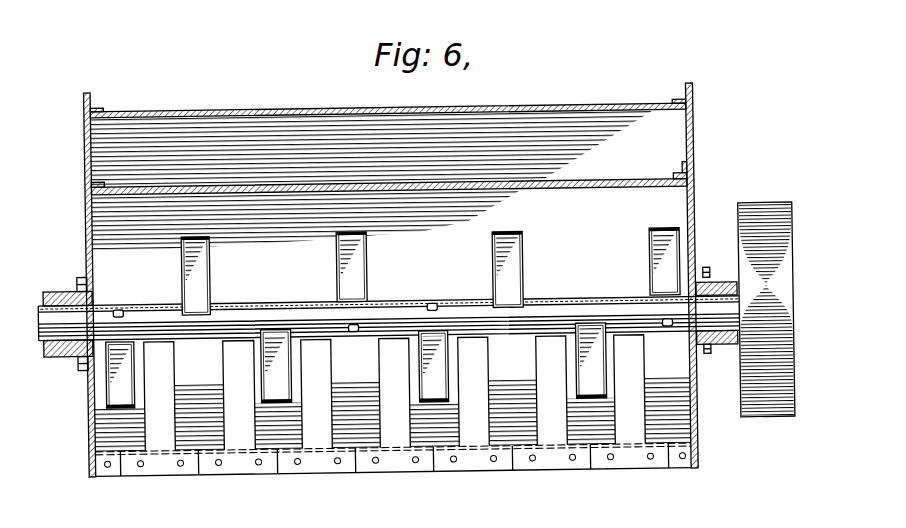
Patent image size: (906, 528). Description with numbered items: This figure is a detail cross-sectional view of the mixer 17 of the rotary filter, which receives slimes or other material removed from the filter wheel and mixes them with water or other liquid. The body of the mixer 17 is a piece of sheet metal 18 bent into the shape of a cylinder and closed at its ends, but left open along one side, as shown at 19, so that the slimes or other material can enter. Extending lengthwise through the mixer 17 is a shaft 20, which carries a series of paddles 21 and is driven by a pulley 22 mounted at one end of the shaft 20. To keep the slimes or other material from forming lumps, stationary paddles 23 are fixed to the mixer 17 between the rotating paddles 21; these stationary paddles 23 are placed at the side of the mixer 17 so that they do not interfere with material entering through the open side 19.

The mixer 17 is at (694, 133).
The piece of sheet metal 18 is at (87, 247).
The open side 19 is at (626, 148).
The shaft 20 is at (260, 305).
The paddles 21 is at (181, 277).
The pulley 22 is at (774, 203).
The stationary paddles 23 is at (166, 372).